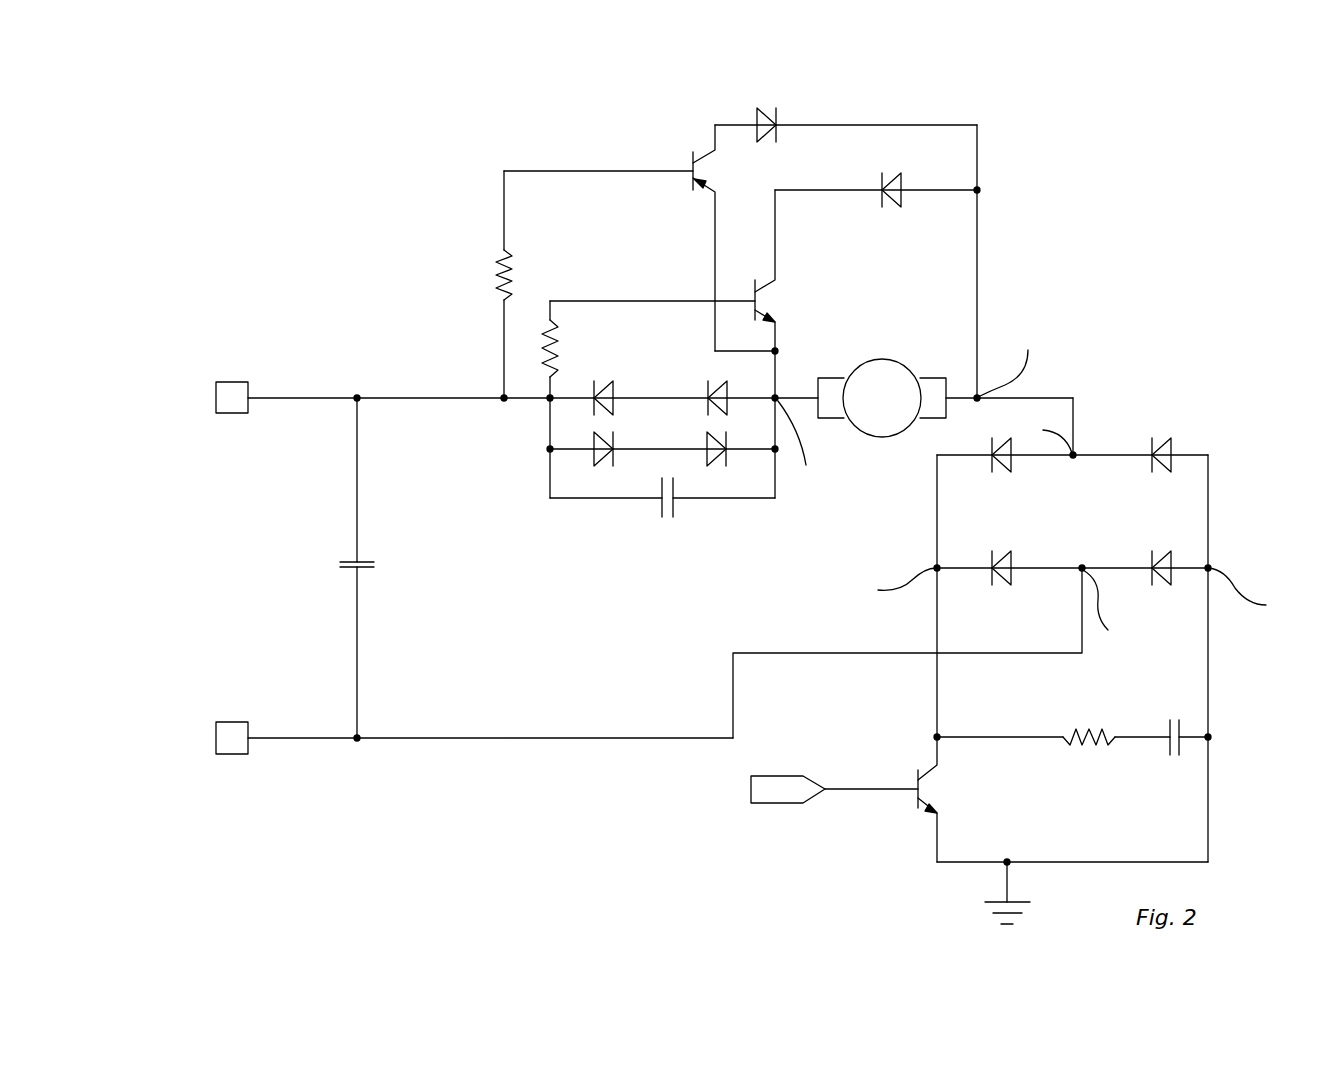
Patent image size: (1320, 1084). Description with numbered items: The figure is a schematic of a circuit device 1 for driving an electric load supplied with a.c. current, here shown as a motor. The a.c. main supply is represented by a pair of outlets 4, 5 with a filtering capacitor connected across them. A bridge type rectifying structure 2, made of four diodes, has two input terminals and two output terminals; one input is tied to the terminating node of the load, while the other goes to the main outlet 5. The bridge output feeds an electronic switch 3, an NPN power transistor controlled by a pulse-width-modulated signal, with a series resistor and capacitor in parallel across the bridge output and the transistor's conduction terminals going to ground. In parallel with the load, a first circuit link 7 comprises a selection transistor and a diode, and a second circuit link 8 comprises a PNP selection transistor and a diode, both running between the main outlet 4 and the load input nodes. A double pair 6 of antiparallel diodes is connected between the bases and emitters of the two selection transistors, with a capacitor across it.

The circuit device 1 is at (1170, 220).
The bridge type rectifying structure 2 is at (1100, 444).
The electronic switch 3 is at (912, 800).
The main outlet 4 is at (232, 392).
The main outlet 5 is at (232, 737).
The double pair of diodes 6 is at (579, 486).
The first circuit link 7 is at (788, 220).
The second circuit link 8 is at (522, 216).